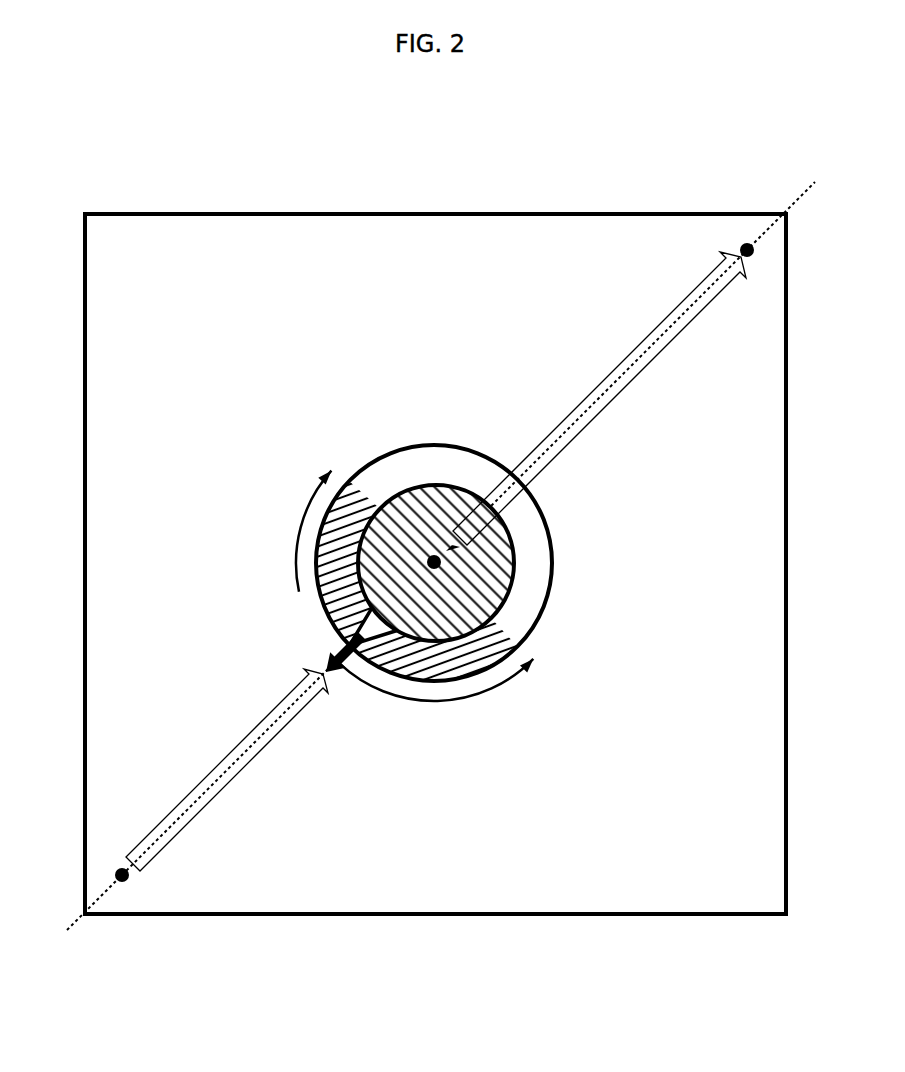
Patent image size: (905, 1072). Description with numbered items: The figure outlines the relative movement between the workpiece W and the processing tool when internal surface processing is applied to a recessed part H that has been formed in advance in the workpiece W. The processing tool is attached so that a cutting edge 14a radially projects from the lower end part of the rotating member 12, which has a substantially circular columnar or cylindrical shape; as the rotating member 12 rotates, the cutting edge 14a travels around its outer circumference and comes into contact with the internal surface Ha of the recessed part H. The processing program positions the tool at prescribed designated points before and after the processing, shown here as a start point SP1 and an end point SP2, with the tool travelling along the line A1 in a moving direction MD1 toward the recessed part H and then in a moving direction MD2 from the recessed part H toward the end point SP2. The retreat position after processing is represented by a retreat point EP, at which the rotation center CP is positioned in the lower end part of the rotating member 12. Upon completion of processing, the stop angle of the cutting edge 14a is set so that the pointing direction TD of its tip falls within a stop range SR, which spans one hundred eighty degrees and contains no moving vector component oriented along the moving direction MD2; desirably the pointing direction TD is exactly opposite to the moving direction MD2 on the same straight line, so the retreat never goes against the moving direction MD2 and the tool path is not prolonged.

The workpiece W is at (205, 213).
The axis / movement line A1 is at (435, 565).
The recessed part H is at (436, 470).
The internal surface Ha is at (545, 562).
The rotating member 12 is at (372, 449).
The cutting edge 14a is at (363, 603).
The retreat point EP is at (512, 574).
The stop range SR is at (445, 706).
The moving direction MD1 is at (232, 792).
The moving direction MD2 is at (614, 375).
The pointing direction TD is at (336, 648).
The rotation center CP is at (440, 555).
The start point SP1 is at (130, 880).
The end point SP2 is at (748, 258).